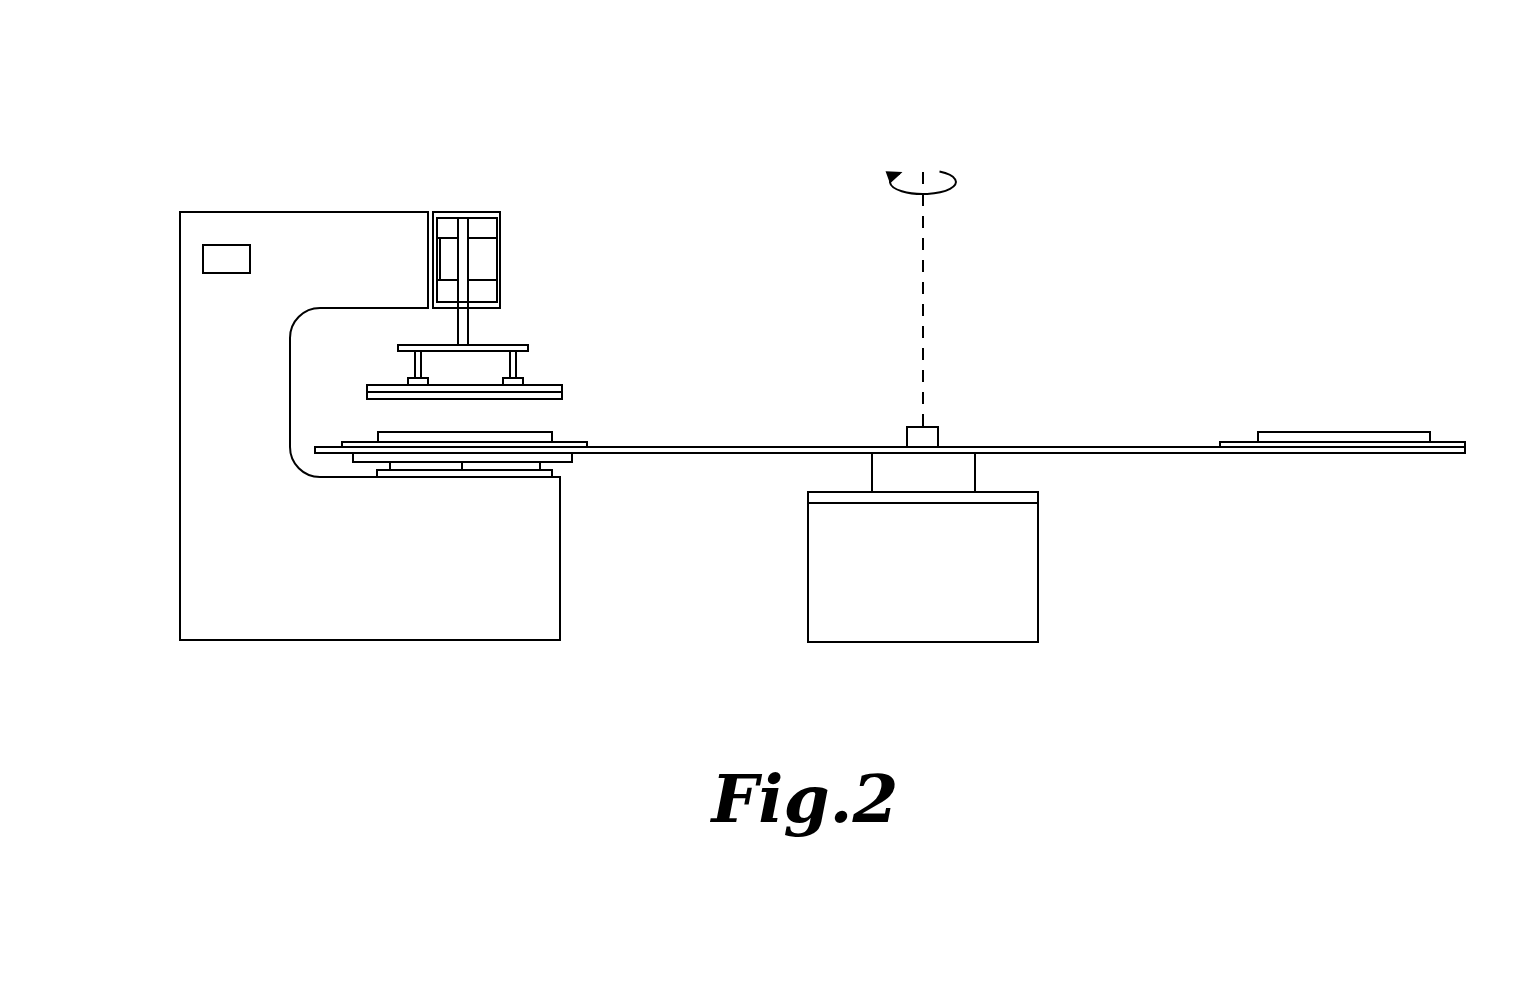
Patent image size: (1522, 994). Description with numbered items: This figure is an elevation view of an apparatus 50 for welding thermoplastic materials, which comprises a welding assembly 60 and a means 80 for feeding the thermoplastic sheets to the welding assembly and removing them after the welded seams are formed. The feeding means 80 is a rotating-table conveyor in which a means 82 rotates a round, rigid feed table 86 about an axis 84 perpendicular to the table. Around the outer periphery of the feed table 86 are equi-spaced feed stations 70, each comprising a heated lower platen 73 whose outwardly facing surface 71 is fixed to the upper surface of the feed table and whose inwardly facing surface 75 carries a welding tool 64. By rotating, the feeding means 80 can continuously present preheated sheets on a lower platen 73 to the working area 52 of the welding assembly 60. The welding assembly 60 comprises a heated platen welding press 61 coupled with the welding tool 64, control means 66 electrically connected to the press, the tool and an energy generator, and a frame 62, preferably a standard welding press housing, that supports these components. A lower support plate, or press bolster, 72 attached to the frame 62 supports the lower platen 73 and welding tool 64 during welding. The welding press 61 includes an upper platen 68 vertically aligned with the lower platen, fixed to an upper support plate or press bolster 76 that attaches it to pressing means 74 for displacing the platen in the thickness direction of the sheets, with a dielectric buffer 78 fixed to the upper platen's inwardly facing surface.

The apparatus 50 is at (732, 190).
The working area 52 is at (465, 421).
The welding assembly 60 is at (335, 168).
The heated platen welding press 61 is at (545, 250).
The frame 62 is at (238, 640).
The welding tool 64 is at (552, 430).
The control means 66 is at (220, 245).
The upper platen 68 is at (545, 385).
The feed station 70 is at (621, 474).
The outwardly facing surface 71 is at (1332, 453).
The lower support plate 72 is at (563, 462).
The lower platen 73 is at (580, 442).
The pressing means 74 is at (470, 333).
The inwardly facing surface 75 is at (1445, 443).
The upper support plate 76 is at (415, 362).
The buffer 78 is at (387, 400).
The means for feeding 80 is at (1135, 592).
The means for rotating 82 is at (1038, 627).
The axis 84 is at (925, 303).
The feed table 86 is at (1068, 433).